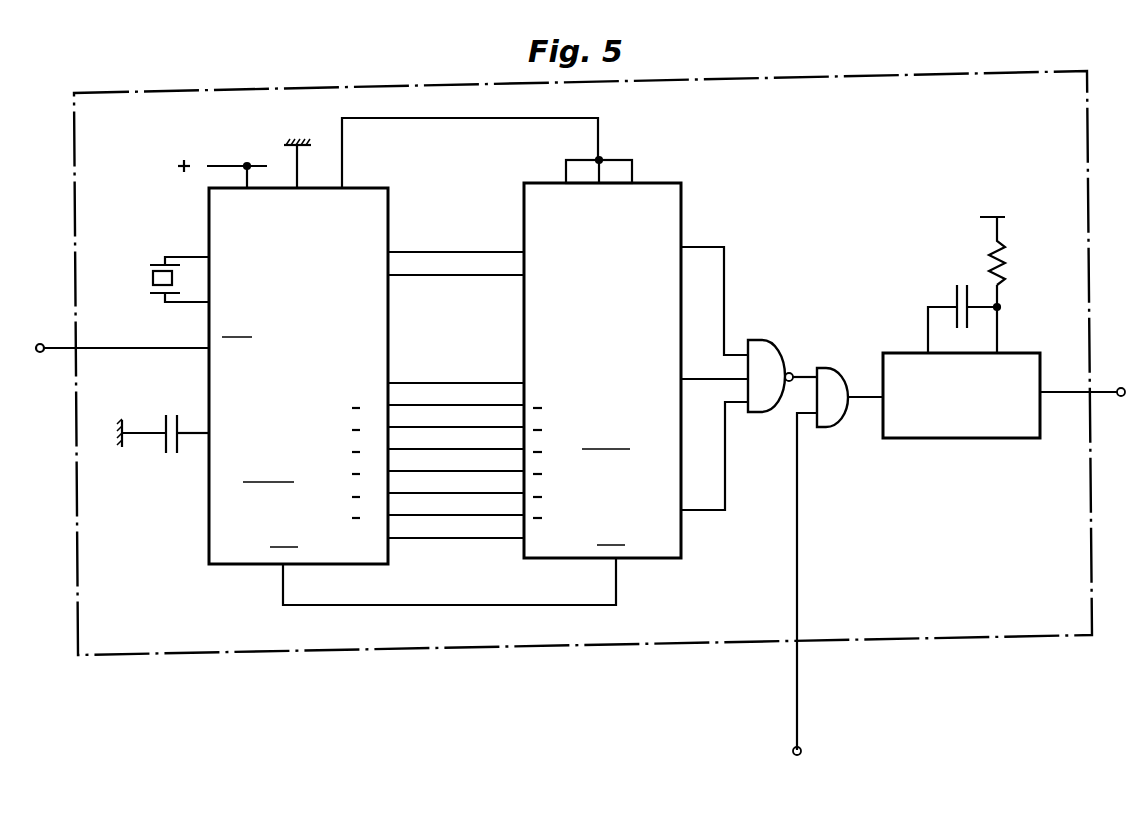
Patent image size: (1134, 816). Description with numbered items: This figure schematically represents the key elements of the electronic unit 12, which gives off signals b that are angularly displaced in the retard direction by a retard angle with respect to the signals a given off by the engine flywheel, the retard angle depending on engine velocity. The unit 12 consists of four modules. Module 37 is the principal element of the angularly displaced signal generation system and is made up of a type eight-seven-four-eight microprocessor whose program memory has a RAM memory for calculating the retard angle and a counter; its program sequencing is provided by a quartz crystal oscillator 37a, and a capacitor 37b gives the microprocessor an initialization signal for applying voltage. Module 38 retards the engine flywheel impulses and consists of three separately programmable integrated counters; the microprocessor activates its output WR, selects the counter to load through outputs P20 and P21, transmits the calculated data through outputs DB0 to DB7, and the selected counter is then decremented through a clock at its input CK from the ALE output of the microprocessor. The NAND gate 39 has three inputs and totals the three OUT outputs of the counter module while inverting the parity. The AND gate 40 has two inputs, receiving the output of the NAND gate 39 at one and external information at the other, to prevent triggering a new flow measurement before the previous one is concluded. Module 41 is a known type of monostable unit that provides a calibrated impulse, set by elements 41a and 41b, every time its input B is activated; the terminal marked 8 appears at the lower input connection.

The unit 12 is at (290, 656).
The module 37 is at (232, 548).
The quartz crystal oscillator 37a is at (150, 281).
The capacitor 37b is at (167, 448).
The module 38 is at (675, 552).
The NAND gate 39 is at (765, 355).
The AND gate 40 is at (838, 417).
The monostable unit 41 is at (976, 430).
The calibrating element 41a is at (953, 295).
The calibrating element 41b is at (1001, 265).
The terminal e 8 is at (802, 746).